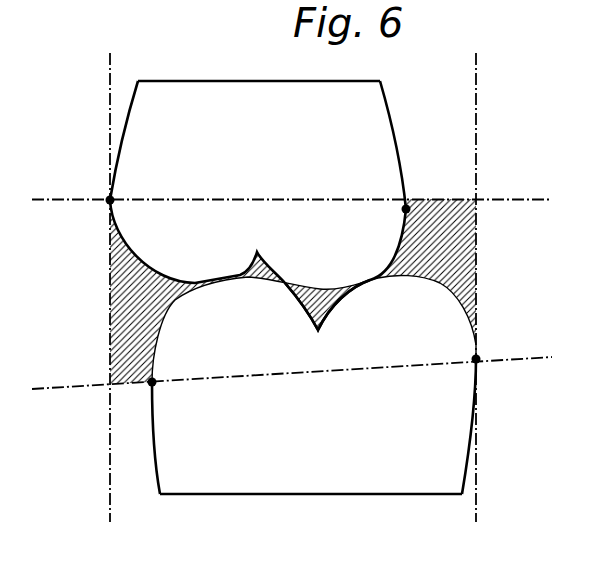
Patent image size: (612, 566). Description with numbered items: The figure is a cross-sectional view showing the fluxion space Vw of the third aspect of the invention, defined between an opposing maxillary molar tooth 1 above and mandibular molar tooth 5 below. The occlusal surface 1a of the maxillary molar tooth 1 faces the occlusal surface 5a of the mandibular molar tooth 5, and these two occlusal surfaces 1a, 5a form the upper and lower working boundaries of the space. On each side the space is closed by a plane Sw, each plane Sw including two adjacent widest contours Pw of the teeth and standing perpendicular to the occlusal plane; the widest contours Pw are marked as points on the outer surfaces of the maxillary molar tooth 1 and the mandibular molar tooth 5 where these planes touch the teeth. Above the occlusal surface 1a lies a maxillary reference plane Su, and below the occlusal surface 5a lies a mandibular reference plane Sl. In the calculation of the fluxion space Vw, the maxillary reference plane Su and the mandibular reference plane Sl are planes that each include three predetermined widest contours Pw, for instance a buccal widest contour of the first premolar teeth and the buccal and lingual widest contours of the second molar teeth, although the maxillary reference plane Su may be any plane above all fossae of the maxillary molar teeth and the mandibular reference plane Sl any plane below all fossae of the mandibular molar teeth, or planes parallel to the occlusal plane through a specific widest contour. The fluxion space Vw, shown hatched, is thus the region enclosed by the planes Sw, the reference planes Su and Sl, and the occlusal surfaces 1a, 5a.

The maxillary molar tooth 1 is at (130, 104).
The occlusal surface of maxillary molar tooth 1a is at (153, 273).
The mandibular molar tooth 5 is at (467, 447).
The occlusal surface of mandibular molar tooth 5a is at (417, 273).
The widest contour Pw is at (108, 198).
The plane including adjacent widest contours Sw is at (110, 293).
The maxillary reference plane Su is at (502, 199).
The mandibular reference plane Sl is at (77, 387).
The fluxion space Vw is at (318, 330).